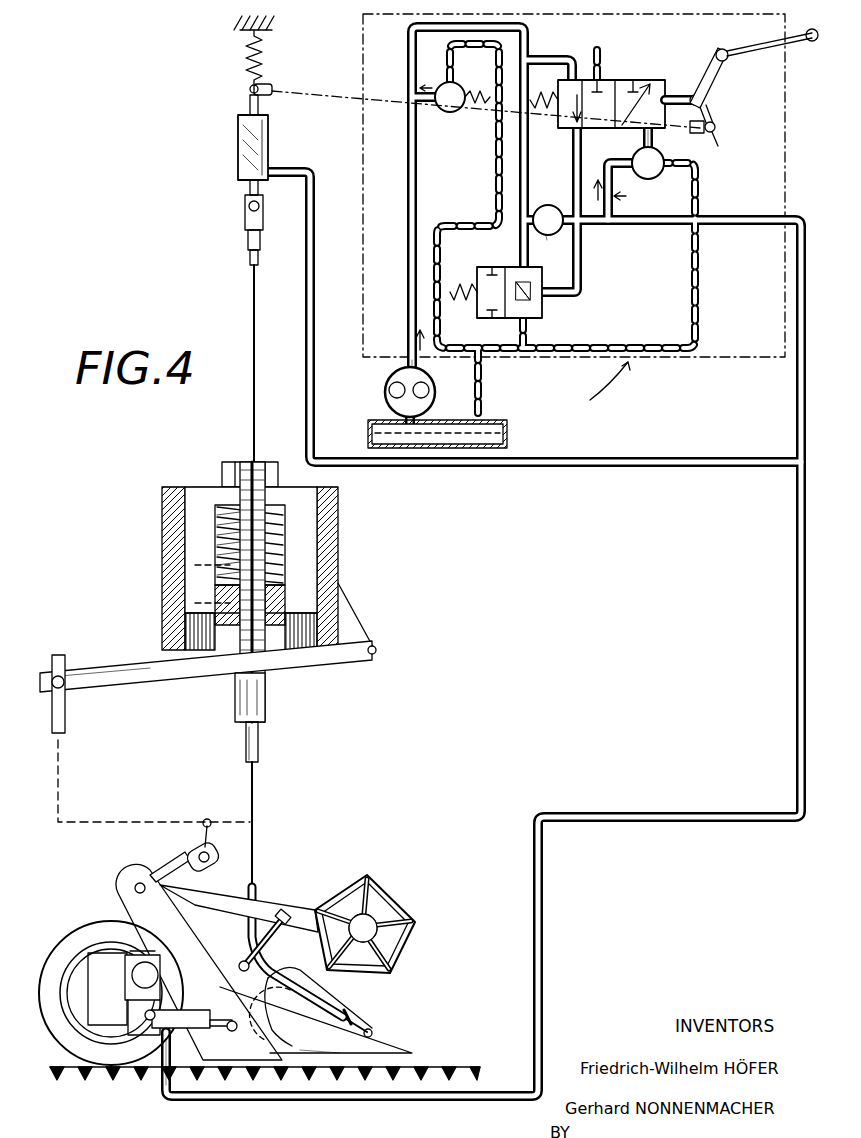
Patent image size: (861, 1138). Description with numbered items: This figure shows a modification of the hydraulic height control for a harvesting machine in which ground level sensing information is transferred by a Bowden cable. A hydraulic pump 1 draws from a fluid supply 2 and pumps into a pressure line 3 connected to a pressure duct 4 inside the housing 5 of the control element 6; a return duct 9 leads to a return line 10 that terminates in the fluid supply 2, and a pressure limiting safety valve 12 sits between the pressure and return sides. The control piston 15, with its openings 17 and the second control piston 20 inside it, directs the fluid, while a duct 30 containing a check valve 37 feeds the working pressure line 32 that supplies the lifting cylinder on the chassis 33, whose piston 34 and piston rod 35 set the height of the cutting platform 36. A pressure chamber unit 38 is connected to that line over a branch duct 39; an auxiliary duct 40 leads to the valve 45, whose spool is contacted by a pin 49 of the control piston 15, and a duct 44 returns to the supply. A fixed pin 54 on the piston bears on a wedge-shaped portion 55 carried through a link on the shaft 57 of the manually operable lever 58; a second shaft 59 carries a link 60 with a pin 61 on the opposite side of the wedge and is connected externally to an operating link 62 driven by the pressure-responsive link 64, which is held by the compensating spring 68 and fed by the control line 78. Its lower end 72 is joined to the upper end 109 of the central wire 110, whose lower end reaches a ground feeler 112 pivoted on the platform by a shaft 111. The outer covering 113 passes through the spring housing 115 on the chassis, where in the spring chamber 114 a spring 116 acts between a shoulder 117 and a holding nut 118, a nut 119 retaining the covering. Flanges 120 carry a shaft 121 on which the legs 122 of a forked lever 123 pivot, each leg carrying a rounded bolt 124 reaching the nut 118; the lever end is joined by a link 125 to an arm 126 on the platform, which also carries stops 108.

The hydraulic pump 1 is at (384, 393).
The fluid supply 2 is at (505, 434).
The pressure line 3 is at (404, 368).
The pressure duct 4 is at (407, 177).
The housing 5 is at (723, 356).
The control element 6 is at (605, 384).
The return duct 9 is at (497, 158).
The return line 10 is at (482, 383).
The pressure limiting safety valve 12 is at (447, 113).
The control piston 15 is at (627, 80).
The openings 17 is at (578, 256).
The second control piston 20 is at (501, 258).
The duct 30 is at (540, 207).
The working pressure line 32 is at (797, 596).
The chassis 33 is at (240, 27).
The piston 34 is at (250, 1088).
The piston rod 35 is at (219, 1031).
The cutting platform 36 is at (177, 1033).
The line / rod 37 is at (546, 237).
The pressure chamber unit 38 is at (239, 917).
The branch duct 39 is at (162, 1104).
The auxiliary duct 40 is at (592, 190).
The duct 44 is at (689, 278).
The valve 45 is at (644, 185).
The pin 49 is at (645, 140).
The fixed pin 54 is at (694, 96).
The wedge-shaped portion 55 is at (720, 92).
The shaft 57 is at (717, 56).
The manually operable lever 58 is at (814, 42).
The second shaft 59 is at (723, 147).
The link 60 is at (716, 127).
The pin 61 is at (705, 114).
The operating link 62 is at (325, 90).
The pressure-responsive link 64 is at (229, 149).
The spring 68 is at (248, 62).
The end of pressure cylinder 72 is at (245, 210).
The control line 78 is at (602, 462).
The stops 108 is at (366, 1088).
The upper end of central wire 109 is at (229, 245).
The central wire 110 is at (252, 313).
The shaft 111 is at (396, 1046).
The ground feeler 112 is at (300, 1088).
The outer covering 113 is at (260, 745).
The spring chamber 114 is at (283, 532).
The spring housing 115 is at (315, 555).
The spring 116 is at (210, 565).
The shoulder 117 is at (285, 487).
The holding nut 118 is at (165, 612).
The nut 119 is at (222, 470).
The flanges 120 is at (340, 620).
The shaft 121 is at (378, 649).
The legs 122 is at (350, 672).
The forked lever 123 is at (115, 688).
The bolt 124 is at (266, 680).
The link 125 is at (154, 781).
The arm 126 is at (172, 866).